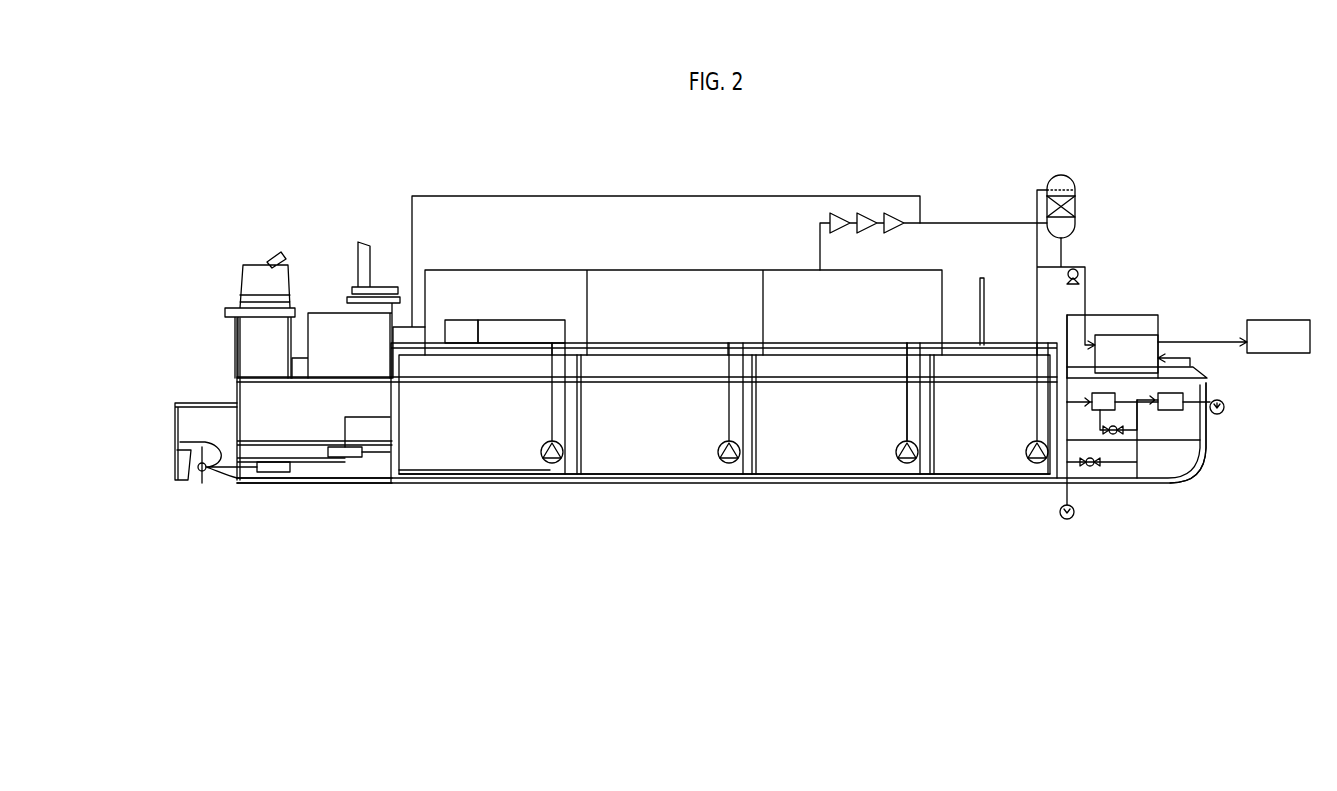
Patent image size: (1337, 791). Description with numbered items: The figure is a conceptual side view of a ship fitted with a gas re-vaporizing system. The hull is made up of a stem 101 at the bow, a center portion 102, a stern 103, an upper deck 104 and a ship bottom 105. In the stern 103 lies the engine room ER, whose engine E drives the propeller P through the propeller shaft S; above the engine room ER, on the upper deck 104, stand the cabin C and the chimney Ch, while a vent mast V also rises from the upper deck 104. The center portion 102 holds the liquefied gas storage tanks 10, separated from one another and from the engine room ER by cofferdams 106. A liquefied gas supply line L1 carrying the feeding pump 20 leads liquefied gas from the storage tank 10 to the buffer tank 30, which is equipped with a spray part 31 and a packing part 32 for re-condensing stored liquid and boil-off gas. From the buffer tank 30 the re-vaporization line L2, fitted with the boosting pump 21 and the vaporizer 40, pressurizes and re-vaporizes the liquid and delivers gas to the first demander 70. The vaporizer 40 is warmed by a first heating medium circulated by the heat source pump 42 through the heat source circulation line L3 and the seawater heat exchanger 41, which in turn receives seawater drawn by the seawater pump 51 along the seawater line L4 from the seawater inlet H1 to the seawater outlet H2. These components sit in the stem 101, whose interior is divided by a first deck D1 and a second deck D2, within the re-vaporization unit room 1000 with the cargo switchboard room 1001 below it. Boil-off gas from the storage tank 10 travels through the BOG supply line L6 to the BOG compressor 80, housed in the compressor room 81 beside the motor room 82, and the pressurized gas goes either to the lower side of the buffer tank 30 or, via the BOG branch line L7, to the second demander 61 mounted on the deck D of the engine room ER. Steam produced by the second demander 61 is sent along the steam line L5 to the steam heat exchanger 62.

The liquefied gas storage tank 10 is at (654, 525).
The feeding pump 20 is at (734, 515).
The boosting pump 21 is at (1068, 277).
The buffer tank 30 is at (1076, 237).
The spray part 31 is at (1094, 185).
The packing part 32 is at (1081, 207).
The vaporizer 40 is at (1150, 338).
The seawater heat exchanger 41 is at (1175, 490).
The heat source pump 42 is at (1150, 508).
The seawater pump 51 is at (1088, 530).
The second demander 61 is at (348, 498).
The steam heat exchanger 62 is at (1090, 395).
The first demander 70 is at (1278, 320).
The BOG compressor 80 is at (894, 213).
The compressor room 81 is at (527, 320).
The motor room 82 is at (464, 320).
The stem 101 is at (1212, 495).
The center portion 102 is at (870, 522).
The stern 103 is at (178, 424).
The upper deck 104 is at (254, 383).
The ship bottom 105 is at (692, 522).
The cofferdam 106 is at (596, 518).
The re-vaporization unit room 1000 is at (1132, 320).
The cargo switchboard room 1001 is at (1190, 366).
The cabin C is at (338, 313).
The chimney Ch is at (252, 343).
The deck D is at (322, 533).
The first deck D1 is at (1250, 430).
The second deck D2 is at (1232, 450).
The engine E is at (270, 533).
The engine room ER is at (260, 398).
The seawater inlet H1 is at (1055, 545).
The seawater outlet H2 is at (1248, 405).
The liquefied gas supply line L1 is at (904, 405).
The re-vaporization line L2 is at (1205, 340).
The heat source circulation line L3 is at (1207, 378).
The seawater line L4 is at (1120, 530).
The steam line L5 is at (492, 530).
The BOG supply line L6 is at (688, 270).
The BOG branch line L7 is at (668, 196).
The propeller P is at (200, 533).
The propeller shaft S is at (228, 533).
The vent mast V is at (985, 289).